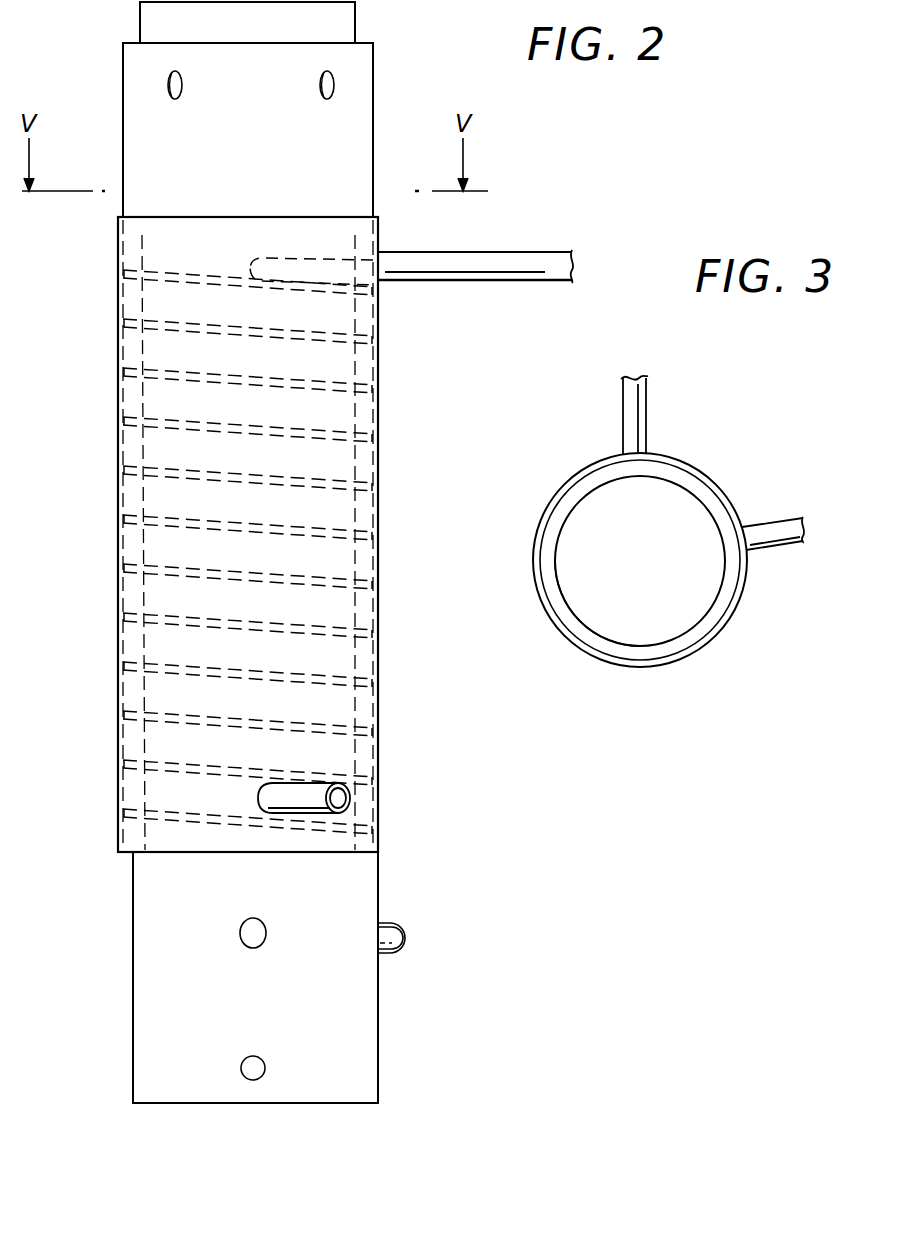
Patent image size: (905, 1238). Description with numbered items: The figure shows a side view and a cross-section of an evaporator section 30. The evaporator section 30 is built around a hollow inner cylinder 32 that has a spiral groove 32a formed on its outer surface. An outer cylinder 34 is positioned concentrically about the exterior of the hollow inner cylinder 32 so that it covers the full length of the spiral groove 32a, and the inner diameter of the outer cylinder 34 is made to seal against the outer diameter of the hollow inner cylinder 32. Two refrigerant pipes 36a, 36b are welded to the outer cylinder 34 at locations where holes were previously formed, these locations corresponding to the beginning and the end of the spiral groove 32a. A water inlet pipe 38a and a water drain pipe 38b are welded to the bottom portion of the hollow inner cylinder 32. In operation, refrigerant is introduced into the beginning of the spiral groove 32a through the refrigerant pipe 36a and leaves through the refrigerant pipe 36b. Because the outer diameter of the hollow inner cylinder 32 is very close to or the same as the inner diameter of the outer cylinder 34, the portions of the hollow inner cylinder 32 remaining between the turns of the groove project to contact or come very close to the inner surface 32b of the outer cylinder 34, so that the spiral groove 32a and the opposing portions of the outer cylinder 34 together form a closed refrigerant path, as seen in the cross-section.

In FIG. 2, the evaporator section 30 is at (503, 755).
In FIG. 3, the evaporator section 30 is at (710, 660).
In FIG. 2, the hollow inner cylinder 32 is at (378, 1034).
In FIG. 3, the hollow inner cylinder 32 is at (578, 470).
In FIG. 2, the spiral groove 32a is at (155, 792).
In FIG. 3, the inner surface 32b is at (606, 642).
In FIG. 2, the outer cylinder 34 is at (118, 244).
In FIG. 3, the outer cylinder 34 is at (687, 457).
In FIG. 2, the refrigerant pipe 36a is at (380, 818).
In FIG. 3, the refrigerant pipe 36a is at (648, 393).
In FIG. 2, the refrigerant pipe 36b is at (480, 280).
In FIG. 3, the refrigerant pipe 36b is at (784, 520).
In FIG. 2, the water inlet pipe 38a is at (405, 938).
In FIG. 2, the water drain pipe 38b is at (242, 933).